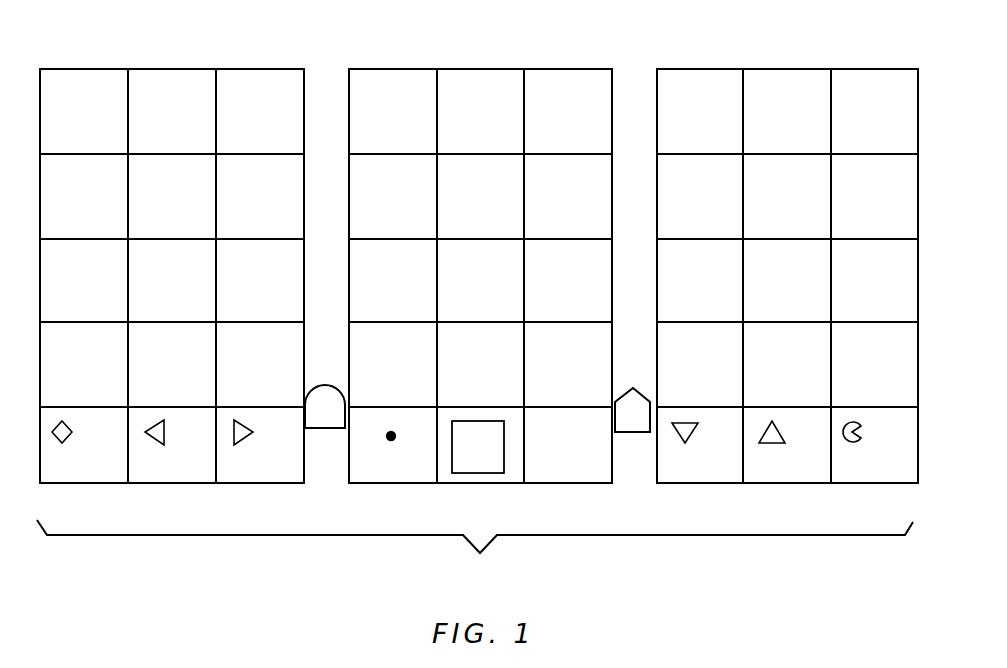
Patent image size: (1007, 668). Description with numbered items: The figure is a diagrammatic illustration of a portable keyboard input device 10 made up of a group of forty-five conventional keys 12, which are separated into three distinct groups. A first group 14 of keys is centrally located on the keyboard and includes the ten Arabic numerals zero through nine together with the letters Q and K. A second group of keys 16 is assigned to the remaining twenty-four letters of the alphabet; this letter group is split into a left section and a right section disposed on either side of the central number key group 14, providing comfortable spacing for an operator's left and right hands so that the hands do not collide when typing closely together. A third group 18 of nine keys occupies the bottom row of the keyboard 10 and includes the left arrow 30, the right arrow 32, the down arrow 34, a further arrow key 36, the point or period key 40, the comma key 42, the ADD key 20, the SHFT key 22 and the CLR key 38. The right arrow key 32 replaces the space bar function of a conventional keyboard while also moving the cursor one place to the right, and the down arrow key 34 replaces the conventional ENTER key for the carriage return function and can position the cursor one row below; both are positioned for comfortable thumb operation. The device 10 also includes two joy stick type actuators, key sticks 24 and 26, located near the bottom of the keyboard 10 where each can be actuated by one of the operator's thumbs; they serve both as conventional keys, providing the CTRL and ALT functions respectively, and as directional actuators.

The portable keyboard input device 10 is at (226, 582).
The conventional keys 12 is at (603, 118).
The first group of keys 14 is at (349, 50).
The second group of keys 16 is at (40, 50).
The third group of keys 18 is at (483, 291).
The ADD key 20 is at (57, 477).
The SHFT key 22 is at (451, 477).
The key stick 24 is at (313, 422).
The key stick 26 is at (623, 423).
The left arrow key 30 is at (145, 477).
The right arrow key 32 is at (232, 477).
The down arrow key 34 is at (672, 478).
The arrow key 36 is at (773, 478).
The CLR key 38 is at (877, 478).
The point (period) key 40 is at (363, 477).
The comma key 42 is at (539, 477).